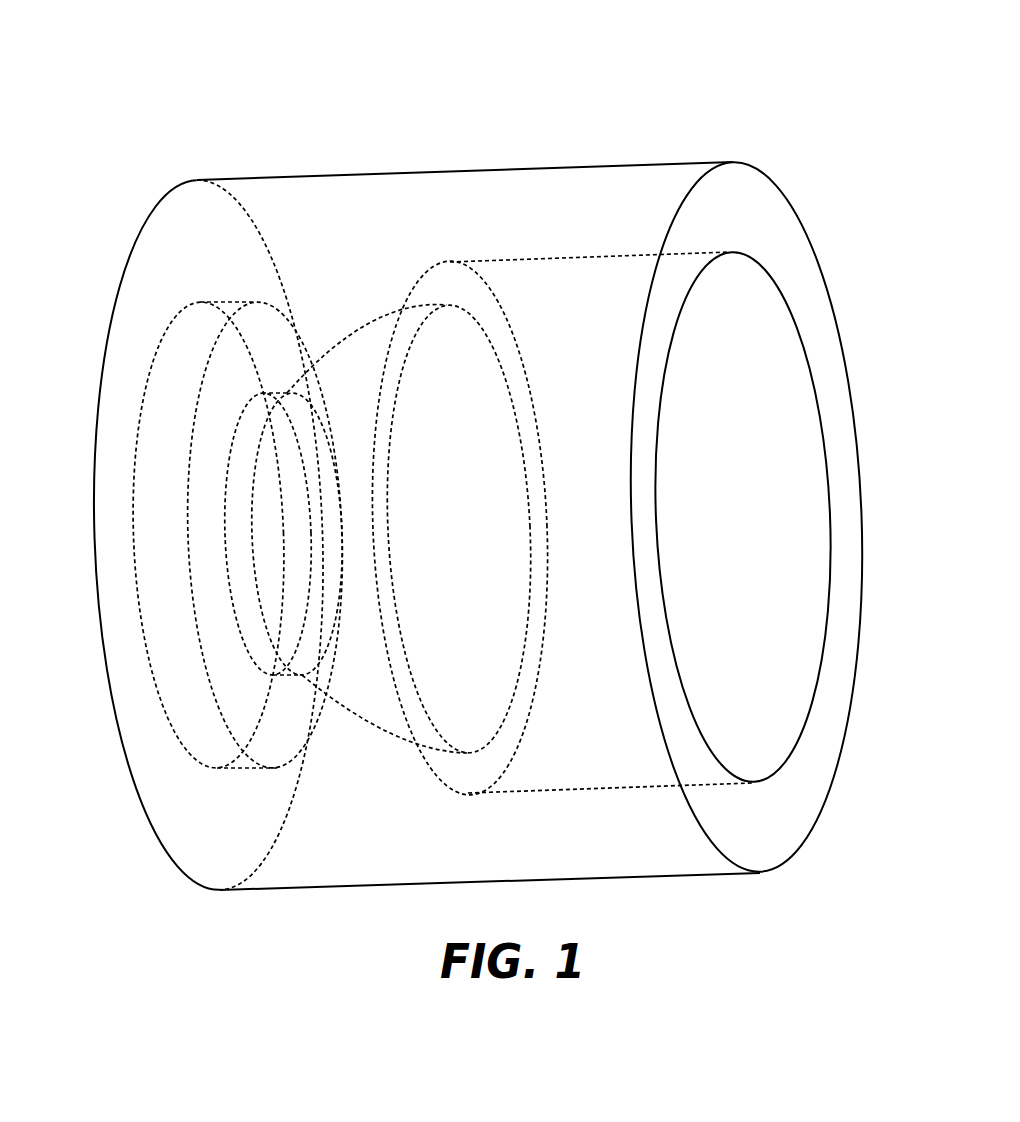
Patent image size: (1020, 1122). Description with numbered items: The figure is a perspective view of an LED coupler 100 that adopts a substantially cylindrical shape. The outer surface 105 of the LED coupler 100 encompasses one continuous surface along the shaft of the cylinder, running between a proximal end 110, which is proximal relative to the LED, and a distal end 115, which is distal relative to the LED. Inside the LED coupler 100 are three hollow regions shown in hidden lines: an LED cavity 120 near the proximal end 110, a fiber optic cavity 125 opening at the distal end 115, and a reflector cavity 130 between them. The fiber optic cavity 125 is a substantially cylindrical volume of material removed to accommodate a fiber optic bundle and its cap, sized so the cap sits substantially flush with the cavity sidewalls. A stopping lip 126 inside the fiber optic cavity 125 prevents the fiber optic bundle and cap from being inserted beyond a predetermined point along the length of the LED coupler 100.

The LED coupler 100 is at (465, 493).
The outer surface 105 is at (471, 509).
The proximal end 110 is at (139, 232).
The distal end 115 is at (740, 193).
The LED cavity 120 is at (215, 527).
The fiber optic cavity 125 is at (687, 505).
The stopping lip 126 is at (450, 287).
The reflector cavity 130 is at (373, 682).